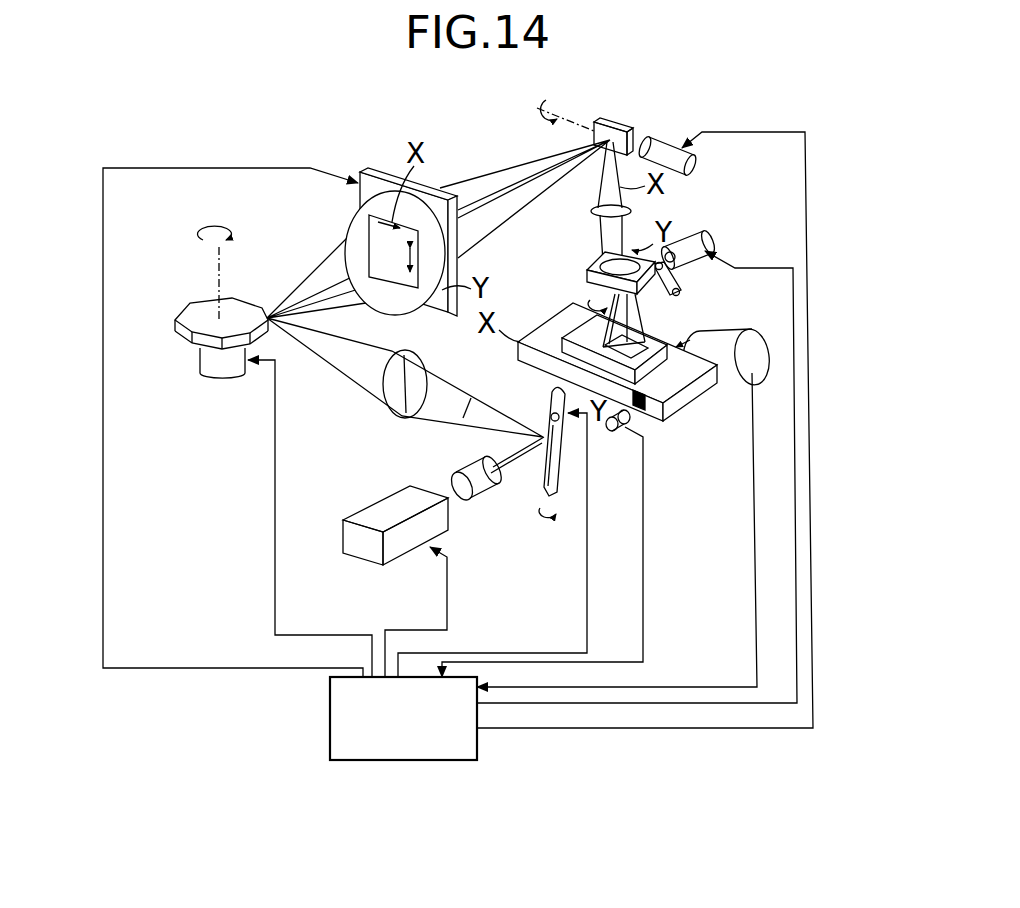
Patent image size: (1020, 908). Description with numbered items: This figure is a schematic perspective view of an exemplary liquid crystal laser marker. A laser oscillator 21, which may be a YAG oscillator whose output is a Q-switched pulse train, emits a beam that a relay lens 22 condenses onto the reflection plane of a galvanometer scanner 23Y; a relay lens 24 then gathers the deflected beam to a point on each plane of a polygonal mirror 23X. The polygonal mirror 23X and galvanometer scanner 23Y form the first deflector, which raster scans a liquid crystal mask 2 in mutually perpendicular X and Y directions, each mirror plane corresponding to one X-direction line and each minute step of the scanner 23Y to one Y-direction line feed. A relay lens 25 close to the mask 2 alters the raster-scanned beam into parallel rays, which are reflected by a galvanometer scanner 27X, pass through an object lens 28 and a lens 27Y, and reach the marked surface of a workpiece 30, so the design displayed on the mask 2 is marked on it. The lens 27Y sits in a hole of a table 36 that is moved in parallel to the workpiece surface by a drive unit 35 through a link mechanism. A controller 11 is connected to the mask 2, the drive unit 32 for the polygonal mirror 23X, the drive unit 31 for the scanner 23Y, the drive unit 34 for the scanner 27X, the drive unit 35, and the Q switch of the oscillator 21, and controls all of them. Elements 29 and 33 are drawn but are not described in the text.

The liquid crystal mask 2 is at (377, 171).
The controller 11 is at (330, 733).
The laser oscillator 21 is at (367, 512).
The relay lens 22 is at (460, 478).
The polygonal mirror 23X is at (238, 299).
The galvanometer scanner 23Y is at (561, 487).
The relay lens 24 is at (410, 350).
The relay lens 25 is at (337, 226).
The galvanometer scanner 27X is at (598, 119).
The lens 27Y is at (588, 262).
The object lens 28 is at (633, 212).
The link 29 is at (669, 310).
The workpiece 30 is at (655, 338).
The drive unit 31 is at (547, 399).
The drive unit 32 is at (200, 358).
The motor 33 is at (738, 331).
The drive unit 34 is at (657, 140).
The drive unit 35 is at (705, 237).
The table 36 is at (584, 288).